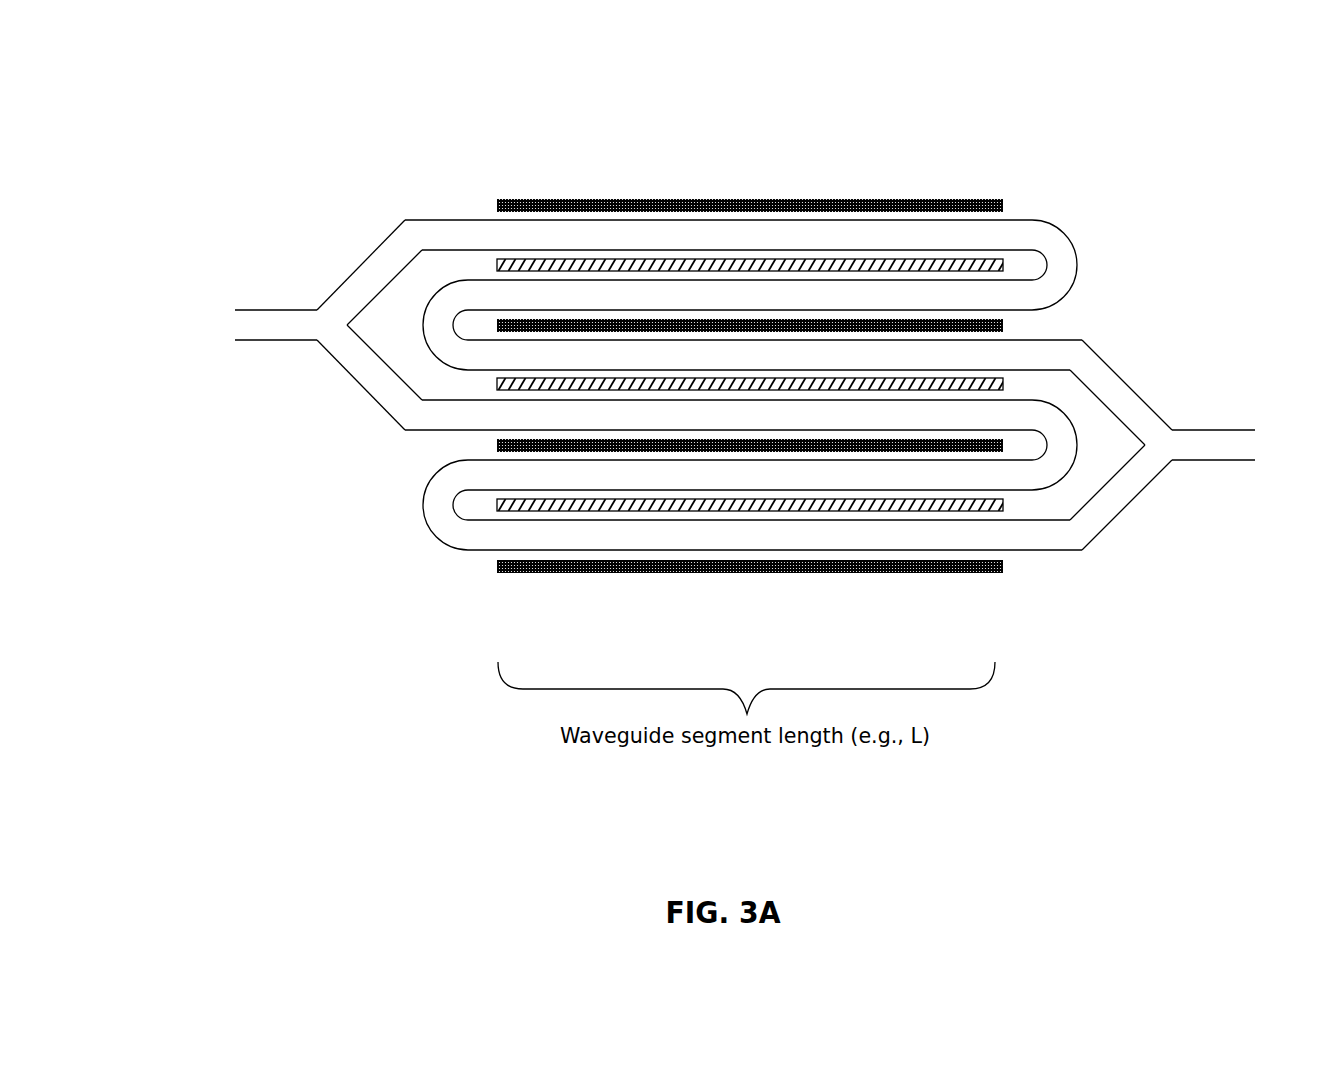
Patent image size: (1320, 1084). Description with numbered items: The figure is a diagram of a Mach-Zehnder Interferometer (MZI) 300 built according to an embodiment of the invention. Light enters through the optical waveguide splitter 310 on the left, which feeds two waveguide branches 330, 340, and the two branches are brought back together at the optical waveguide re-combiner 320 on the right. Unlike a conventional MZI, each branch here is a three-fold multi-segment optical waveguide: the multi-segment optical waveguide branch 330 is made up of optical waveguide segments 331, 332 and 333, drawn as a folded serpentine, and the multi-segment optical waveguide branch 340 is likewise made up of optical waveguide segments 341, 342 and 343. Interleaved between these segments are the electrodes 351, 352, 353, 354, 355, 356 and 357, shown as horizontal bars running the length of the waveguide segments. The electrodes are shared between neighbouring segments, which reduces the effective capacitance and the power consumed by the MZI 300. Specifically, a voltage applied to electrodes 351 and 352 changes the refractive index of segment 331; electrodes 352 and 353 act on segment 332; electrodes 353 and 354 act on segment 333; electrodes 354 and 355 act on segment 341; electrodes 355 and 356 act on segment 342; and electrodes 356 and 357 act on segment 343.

The Mach-Zehnder Interferometer 300 is at (1185, 737).
The optical waveguide splitter 310 is at (325, 332).
The optical waveguide re-combiner 320 is at (1162, 443).
The multi-segment optical waveguide branch 330 is at (630, 264).
The optical waveguide segment 331 is at (487, 233).
The optical waveguide segment 332 is at (517, 293).
The optical waveguide segment 333 is at (527, 358).
The multi-segment optical waveguide branch 340 is at (652, 513).
The optical waveguide segment 341 is at (515, 413).
The optical waveguide segment 342 is at (538, 470).
The optical waveguide segment 343 is at (543, 528).
The electrode 351 is at (1003, 198).
The electrode 352 is at (997, 262).
The electrode 353 is at (1003, 325).
The electrode 354 is at (980, 378).
The electrode 355 is at (1010, 437).
The electrode 356 is at (1003, 508).
The electrode 357 is at (1003, 571).